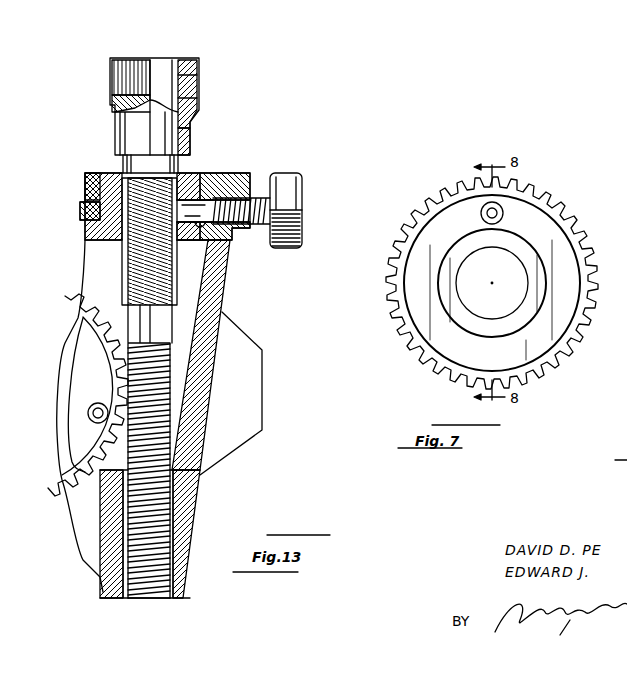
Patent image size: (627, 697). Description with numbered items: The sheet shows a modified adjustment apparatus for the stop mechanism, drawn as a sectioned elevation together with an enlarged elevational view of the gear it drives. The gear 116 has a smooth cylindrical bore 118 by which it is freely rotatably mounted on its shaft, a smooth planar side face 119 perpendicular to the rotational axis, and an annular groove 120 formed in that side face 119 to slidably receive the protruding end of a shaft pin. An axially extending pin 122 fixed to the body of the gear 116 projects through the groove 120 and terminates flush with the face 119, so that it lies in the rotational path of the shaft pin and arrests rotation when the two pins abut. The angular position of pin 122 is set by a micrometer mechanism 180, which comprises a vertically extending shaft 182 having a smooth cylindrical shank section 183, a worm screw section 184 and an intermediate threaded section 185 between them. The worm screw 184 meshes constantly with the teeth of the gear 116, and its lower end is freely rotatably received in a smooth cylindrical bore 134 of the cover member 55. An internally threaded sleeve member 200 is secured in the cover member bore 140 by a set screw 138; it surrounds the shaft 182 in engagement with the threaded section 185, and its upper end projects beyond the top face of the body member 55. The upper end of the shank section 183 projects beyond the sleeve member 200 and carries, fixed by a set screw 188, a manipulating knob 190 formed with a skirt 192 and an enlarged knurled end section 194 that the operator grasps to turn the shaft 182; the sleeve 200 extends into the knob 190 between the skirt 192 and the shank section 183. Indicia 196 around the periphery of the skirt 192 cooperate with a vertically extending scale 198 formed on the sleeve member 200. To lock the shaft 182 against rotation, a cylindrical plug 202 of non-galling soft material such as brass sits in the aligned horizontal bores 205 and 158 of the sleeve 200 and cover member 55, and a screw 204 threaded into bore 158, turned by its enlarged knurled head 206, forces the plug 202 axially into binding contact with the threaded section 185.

In FIG. 13, the cover member 55 is at (200, 481).
In FIG. 13, the gear 116 is at (78, 443).
In FIG. 7, the gear 116 is at (552, 201).
In FIG. 7, the smooth cylindrical bore 118 is at (466, 260).
In FIG. 7, the planar side face 119 is at (545, 297).
In FIG. 13, the annular groove 120 is at (78, 374).
In FIG. 7, the annular groove 120 is at (560, 338).
In FIG. 13, the axially extending pin 122 is at (88, 413).
In FIG. 7, the axially extending pin 122 is at (484, 213).
In FIG. 13, the smooth cylindrical bore 134 is at (120, 488).
In FIG. 13, the set screw 138 is at (86, 214).
In FIG. 13, the bore 140 is at (106, 174).
In FIG. 13, the horizontal bore 158 is at (258, 204).
In FIG. 13, the micrometer mechanism 180 is at (248, 89).
In FIG. 13, the vertically extending shaft 182 is at (175, 338).
In FIG. 13, the smooth cylindrical shank section 183 is at (192, 117).
In FIG. 13, the worm screw section 184 is at (150, 592).
In FIG. 13, the intermediate threaded section 185 is at (143, 279).
In FIG. 13, the set screw 188 is at (196, 72).
In FIG. 13, the manipulating knob 190 is at (118, 56).
In FIG. 13, the skirt 192 is at (116, 127).
In FIG. 13, the enlarged knurled end section 194 is at (114, 72).
In FIG. 13, the indicia 196 is at (170, 152).
In FIG. 13, the vertically extending scale 198 is at (94, 202).
In FIG. 13, the sleeve member 200 is at (175, 268).
In FIG. 13, the cylindrical plug 202 is at (206, 205).
In FIG. 13, the screw 204 is at (302, 188).
In FIG. 13, the horizontal bore 205 is at (222, 228).
In FIG. 13, the enlarged knurled head 206 is at (305, 244).